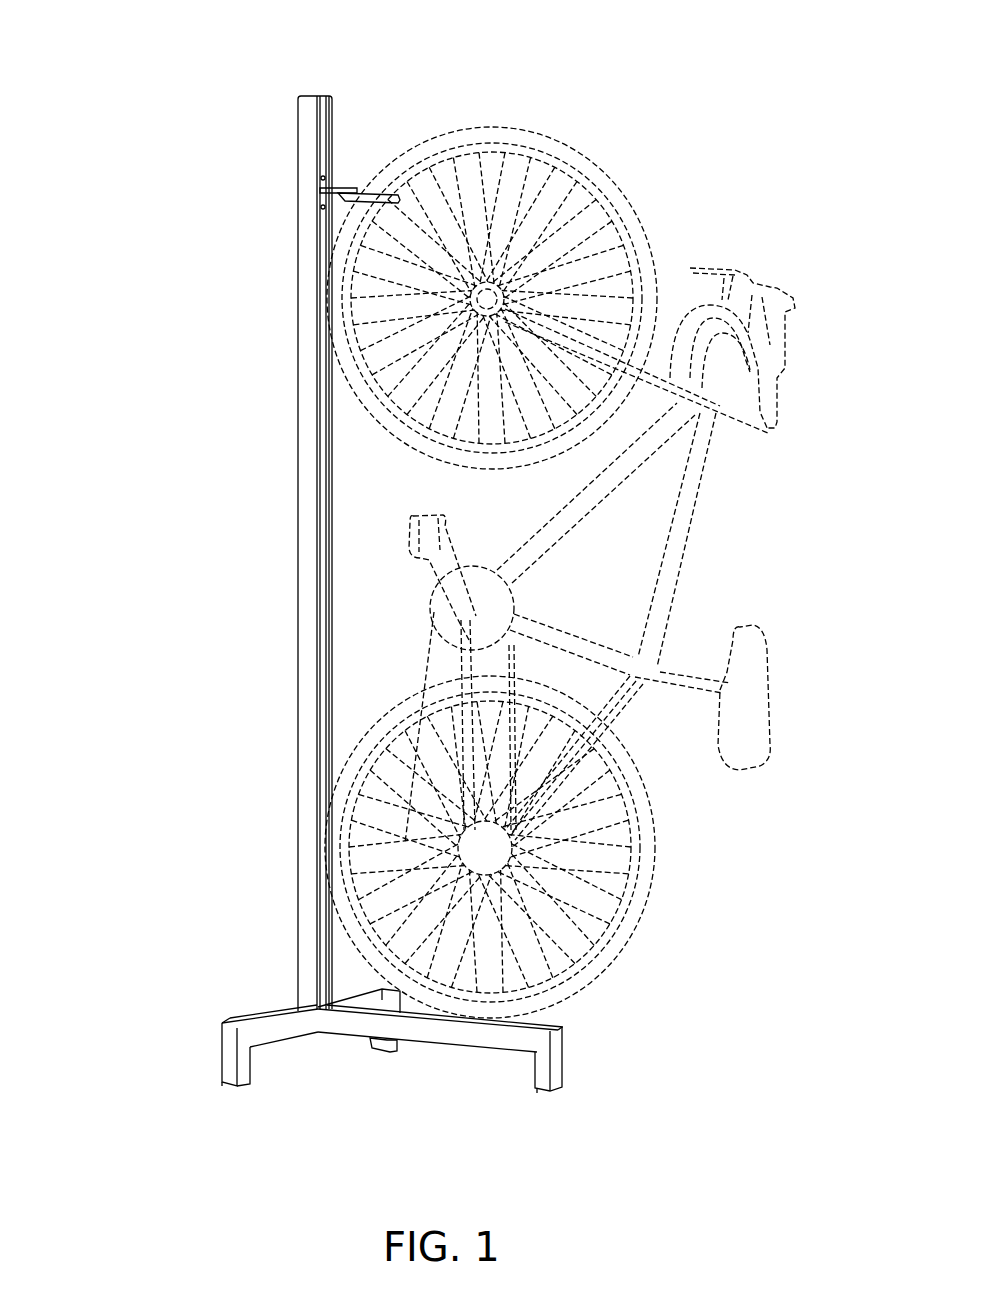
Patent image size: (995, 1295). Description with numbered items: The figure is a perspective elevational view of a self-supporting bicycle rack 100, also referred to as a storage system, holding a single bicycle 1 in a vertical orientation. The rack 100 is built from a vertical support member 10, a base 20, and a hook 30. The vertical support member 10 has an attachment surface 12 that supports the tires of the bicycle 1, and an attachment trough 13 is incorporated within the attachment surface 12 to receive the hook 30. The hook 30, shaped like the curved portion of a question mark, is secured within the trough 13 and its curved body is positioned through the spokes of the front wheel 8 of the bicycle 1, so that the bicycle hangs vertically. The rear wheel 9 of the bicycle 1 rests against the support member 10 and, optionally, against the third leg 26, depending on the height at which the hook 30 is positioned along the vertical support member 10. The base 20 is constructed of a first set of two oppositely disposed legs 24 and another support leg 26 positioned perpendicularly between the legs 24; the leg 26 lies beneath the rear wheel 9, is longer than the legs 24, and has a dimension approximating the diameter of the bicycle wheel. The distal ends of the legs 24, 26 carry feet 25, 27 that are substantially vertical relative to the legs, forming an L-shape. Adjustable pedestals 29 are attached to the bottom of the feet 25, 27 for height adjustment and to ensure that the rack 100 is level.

The self-supporting bicycle rack 100 is at (100, 103).
The bicycle 1 is at (808, 351).
The front wheel 8 is at (452, 130).
The rear wheel 9 is at (650, 902).
The vertical support member 10 is at (288, 159).
The attachment surface 12 is at (300, 350).
The attachment trough 13 is at (323, 545).
The base 20 is at (295, 1003).
The legs 24 is at (258, 1012).
The feet 25 is at (227, 1058).
The support leg 26 is at (530, 1022).
The foot 27 is at (557, 1065).
The adjustable pedestals 29 is at (227, 1090).
The hook 30 is at (322, 190).